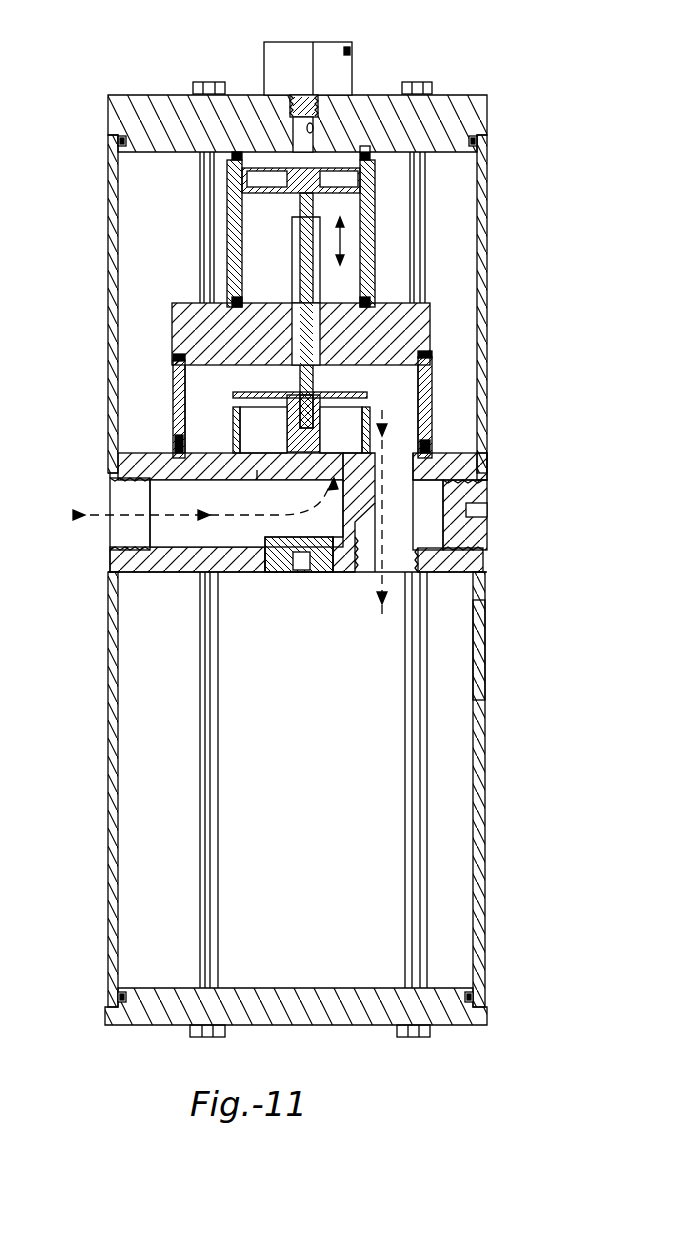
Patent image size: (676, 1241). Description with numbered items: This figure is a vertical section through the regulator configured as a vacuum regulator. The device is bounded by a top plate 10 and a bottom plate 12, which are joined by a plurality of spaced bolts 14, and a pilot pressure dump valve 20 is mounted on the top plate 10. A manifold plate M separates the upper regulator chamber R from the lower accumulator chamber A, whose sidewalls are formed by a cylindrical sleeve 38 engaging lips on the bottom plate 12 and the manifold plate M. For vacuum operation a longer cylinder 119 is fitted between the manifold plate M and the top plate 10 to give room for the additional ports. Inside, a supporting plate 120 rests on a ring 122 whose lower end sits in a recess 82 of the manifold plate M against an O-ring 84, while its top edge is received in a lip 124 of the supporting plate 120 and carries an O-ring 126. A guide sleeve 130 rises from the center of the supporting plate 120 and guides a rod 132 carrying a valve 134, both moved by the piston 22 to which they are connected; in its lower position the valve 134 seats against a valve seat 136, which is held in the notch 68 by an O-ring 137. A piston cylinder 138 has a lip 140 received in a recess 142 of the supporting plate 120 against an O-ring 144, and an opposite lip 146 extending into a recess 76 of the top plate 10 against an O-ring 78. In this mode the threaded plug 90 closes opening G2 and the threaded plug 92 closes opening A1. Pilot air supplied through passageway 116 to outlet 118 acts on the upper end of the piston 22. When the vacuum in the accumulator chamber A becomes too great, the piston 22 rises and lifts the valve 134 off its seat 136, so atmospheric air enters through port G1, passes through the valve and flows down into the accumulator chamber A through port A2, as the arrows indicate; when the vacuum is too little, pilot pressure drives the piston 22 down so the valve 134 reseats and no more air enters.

The top plate 10 is at (482, 98).
The bottom plate 12 is at (457, 1010).
The bolts 14 is at (210, 82).
The pilot pressure dump valve 20 is at (322, 45).
The piston 22 is at (340, 230).
The cylindrical sleeve 38 is at (112, 795).
The circumferential recess 68 is at (225, 512).
The circumferential recess 76 is at (468, 96).
The O-ring 78 is at (370, 152).
The circumferential recess 82 is at (177, 440).
The O-ring 84 is at (238, 448).
The threaded plug 90 is at (285, 572).
The threaded plug 92 is at (488, 532).
The passageway 116 is at (314, 128).
The outlet 118 is at (293, 137).
The cylinder 119 is at (113, 248).
The supporting plate 120 is at (113, 330).
The ring 122 is at (180, 378).
The lip 124 is at (182, 355).
The O-ring 126 is at (432, 358).
The guide sleeve 130 is at (298, 248).
The rod 132 is at (312, 368).
The valve 134 is at (298, 430).
The valve seat 136 is at (432, 392).
The O-ring 137 is at (257, 476).
The piston cylinder 138 is at (232, 190).
The lip 140 is at (240, 298).
The circumferential recess 142 is at (240, 303).
The O-ring 144 is at (183, 327).
The lip 146 is at (237, 155).
The regulator chamber R is at (488, 243).
The accumulator chamber A is at (488, 682).
The manifold plate M is at (545, 455).
The port G1 is at (150, 485).
The opening G2 is at (270, 572).
The opening A1 is at (490, 487).
The port A2 is at (360, 555).